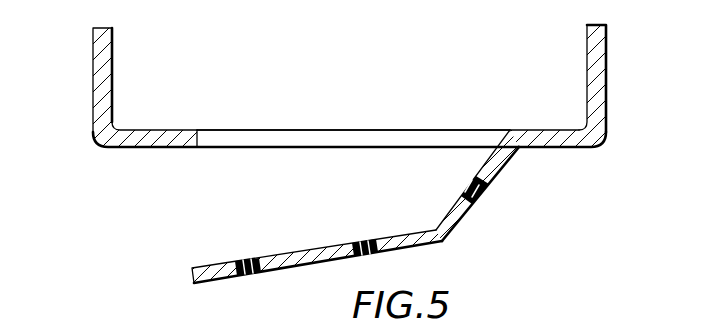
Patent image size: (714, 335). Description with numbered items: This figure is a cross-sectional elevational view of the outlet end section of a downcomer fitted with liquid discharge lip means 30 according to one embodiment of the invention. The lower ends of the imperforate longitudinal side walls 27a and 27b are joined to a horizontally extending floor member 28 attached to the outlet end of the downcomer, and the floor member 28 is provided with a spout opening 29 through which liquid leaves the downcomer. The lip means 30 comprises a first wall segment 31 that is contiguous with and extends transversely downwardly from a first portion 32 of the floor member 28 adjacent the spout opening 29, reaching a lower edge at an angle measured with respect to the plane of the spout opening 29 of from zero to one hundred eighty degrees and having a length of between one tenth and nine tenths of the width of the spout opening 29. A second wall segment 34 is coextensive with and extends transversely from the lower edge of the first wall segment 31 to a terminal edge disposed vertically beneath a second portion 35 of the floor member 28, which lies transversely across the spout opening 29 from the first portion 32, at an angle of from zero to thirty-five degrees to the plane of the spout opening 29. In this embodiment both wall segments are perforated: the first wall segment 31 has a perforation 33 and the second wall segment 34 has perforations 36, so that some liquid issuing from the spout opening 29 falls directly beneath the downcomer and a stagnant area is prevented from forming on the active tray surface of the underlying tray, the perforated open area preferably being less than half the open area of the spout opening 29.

The lip means 30 is at (464, 253).
The imperforate longitudinal side wall 27a is at (93, 62).
The imperforate longitudinal side wall 27b is at (606, 52).
The floor member 28 is at (172, 128).
The spout opening 29 is at (322, 143).
The second portion of the downcomer floor member 35 is at (186, 150).
The first portion of the downcomer floor member 32 is at (535, 152).
The perforation 33 is at (481, 194).
The first wall segment 31 is at (456, 227).
The second wall segment 34 is at (313, 268).
The perforations 36 is at (368, 237).